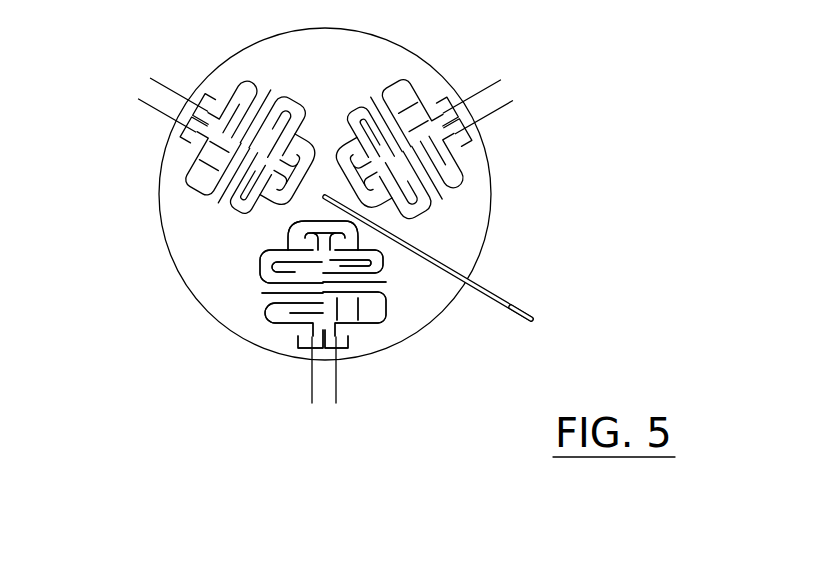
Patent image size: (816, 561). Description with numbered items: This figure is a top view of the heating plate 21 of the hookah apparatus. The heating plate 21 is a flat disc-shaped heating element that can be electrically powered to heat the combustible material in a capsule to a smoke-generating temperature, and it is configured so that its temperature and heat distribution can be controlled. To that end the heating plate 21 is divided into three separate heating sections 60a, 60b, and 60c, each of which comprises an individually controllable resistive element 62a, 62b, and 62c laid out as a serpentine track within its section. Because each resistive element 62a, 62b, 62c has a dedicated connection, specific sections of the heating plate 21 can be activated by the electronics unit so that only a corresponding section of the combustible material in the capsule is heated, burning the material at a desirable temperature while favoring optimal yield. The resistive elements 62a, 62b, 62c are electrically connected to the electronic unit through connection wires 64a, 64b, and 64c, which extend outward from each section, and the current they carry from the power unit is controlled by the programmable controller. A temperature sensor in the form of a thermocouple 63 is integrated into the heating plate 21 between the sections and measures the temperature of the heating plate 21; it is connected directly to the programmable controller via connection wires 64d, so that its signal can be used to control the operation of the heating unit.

The heating plate 21 is at (507, 213).
The heating section 60a is at (461, 118).
The heating section 60b is at (256, 353).
The heating section 60c is at (190, 116).
The resistive element 62a is at (453, 168).
The resistive element 62b is at (267, 270).
The resistive element 62c is at (265, 97).
The thermocouple 63 is at (502, 293).
The connection wires 64a is at (507, 75).
The connection wires 64b is at (335, 404).
The connection wires 64c is at (147, 80).
The connection wires 64d is at (537, 327).